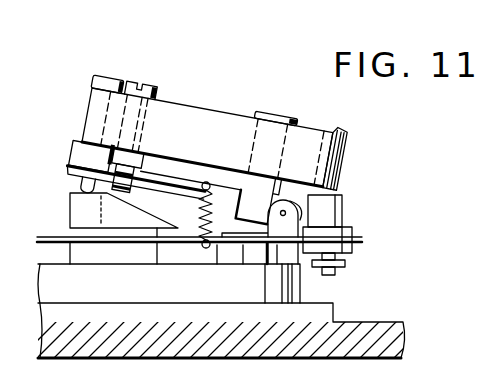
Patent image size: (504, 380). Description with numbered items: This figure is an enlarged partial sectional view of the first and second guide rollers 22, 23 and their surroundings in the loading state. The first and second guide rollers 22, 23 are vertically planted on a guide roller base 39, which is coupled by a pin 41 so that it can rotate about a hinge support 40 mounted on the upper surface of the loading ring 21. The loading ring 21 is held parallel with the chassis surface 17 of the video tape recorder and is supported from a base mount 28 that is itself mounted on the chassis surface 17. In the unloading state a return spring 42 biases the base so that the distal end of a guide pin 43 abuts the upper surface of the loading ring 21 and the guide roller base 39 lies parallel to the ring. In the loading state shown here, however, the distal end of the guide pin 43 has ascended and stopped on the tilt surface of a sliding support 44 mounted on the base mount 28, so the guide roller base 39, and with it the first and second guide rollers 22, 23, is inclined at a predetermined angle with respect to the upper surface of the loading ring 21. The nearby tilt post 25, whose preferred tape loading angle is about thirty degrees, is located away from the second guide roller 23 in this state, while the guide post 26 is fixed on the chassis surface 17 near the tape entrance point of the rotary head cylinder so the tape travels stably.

The chassis surface 17 is at (368, 322).
The loading ring 21 is at (362, 240).
The first guide roller 22 is at (106, 77).
The second guide roller 23 is at (273, 110).
The tilt post 25 is at (338, 131).
The guide post 26 is at (147, 81).
The base mount 28 is at (291, 285).
The guide roller base 39 is at (73, 164).
The hinge support 40 is at (300, 211).
The pin 41 is at (284, 209).
The return spring 42 is at (203, 243).
The guide pin 43 is at (79, 186).
The sliding support 44 is at (80, 211).